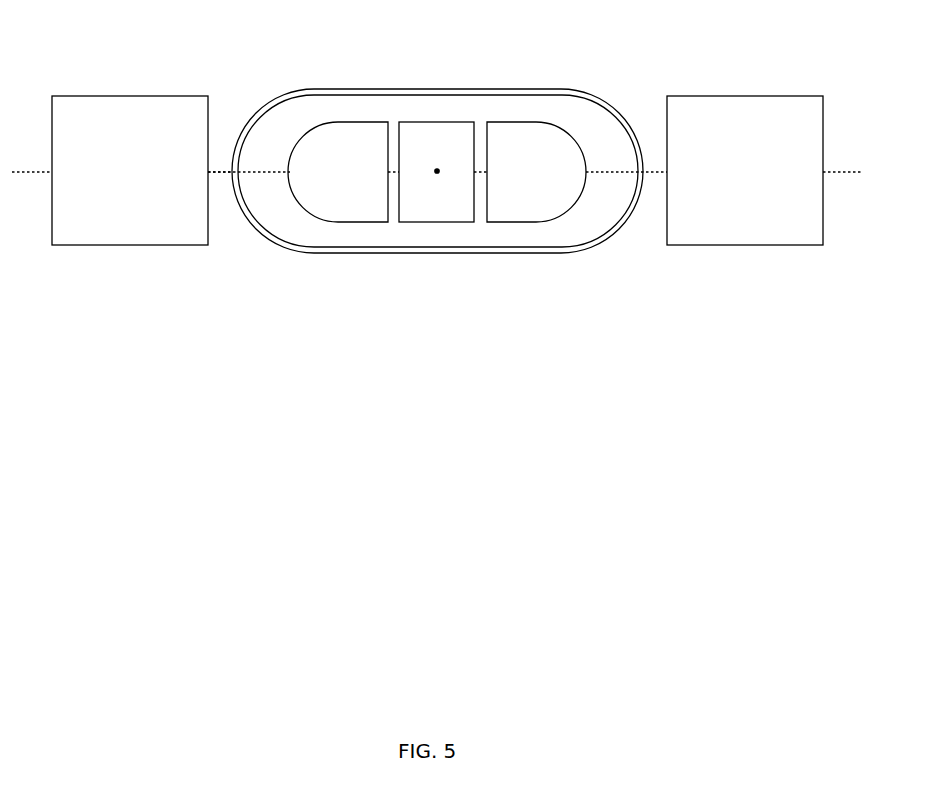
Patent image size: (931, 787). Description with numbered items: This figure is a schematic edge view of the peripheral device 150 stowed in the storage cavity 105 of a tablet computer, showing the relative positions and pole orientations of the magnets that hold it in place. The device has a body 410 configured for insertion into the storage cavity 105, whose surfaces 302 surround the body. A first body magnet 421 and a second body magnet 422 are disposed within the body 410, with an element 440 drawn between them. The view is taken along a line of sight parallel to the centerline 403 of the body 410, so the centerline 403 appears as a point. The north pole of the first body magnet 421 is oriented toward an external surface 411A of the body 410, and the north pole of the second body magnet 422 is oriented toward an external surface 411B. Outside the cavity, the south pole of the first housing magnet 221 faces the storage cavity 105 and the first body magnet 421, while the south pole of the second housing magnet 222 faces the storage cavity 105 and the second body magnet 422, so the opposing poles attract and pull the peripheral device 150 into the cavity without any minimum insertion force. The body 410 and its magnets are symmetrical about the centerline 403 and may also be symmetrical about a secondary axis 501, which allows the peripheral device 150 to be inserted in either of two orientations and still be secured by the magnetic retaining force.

The storage cavity 105 is at (504, 92).
The peripheral device 150 is at (368, 298).
The first housing magnet 221 is at (148, 183).
The second housing magnet 222 is at (764, 183).
The surfaces of storage cavity 302 is at (362, 88).
The centerline 403 is at (437, 169).
The body 410 is at (619, 148).
The external surface 411A is at (240, 172).
The external surface 411B is at (634, 177).
The first body magnet 421 is at (358, 183).
The second body magnet 422 is at (554, 183).
The central element 440 is at (455, 207).
The secondary axis 501 is at (217, 174).